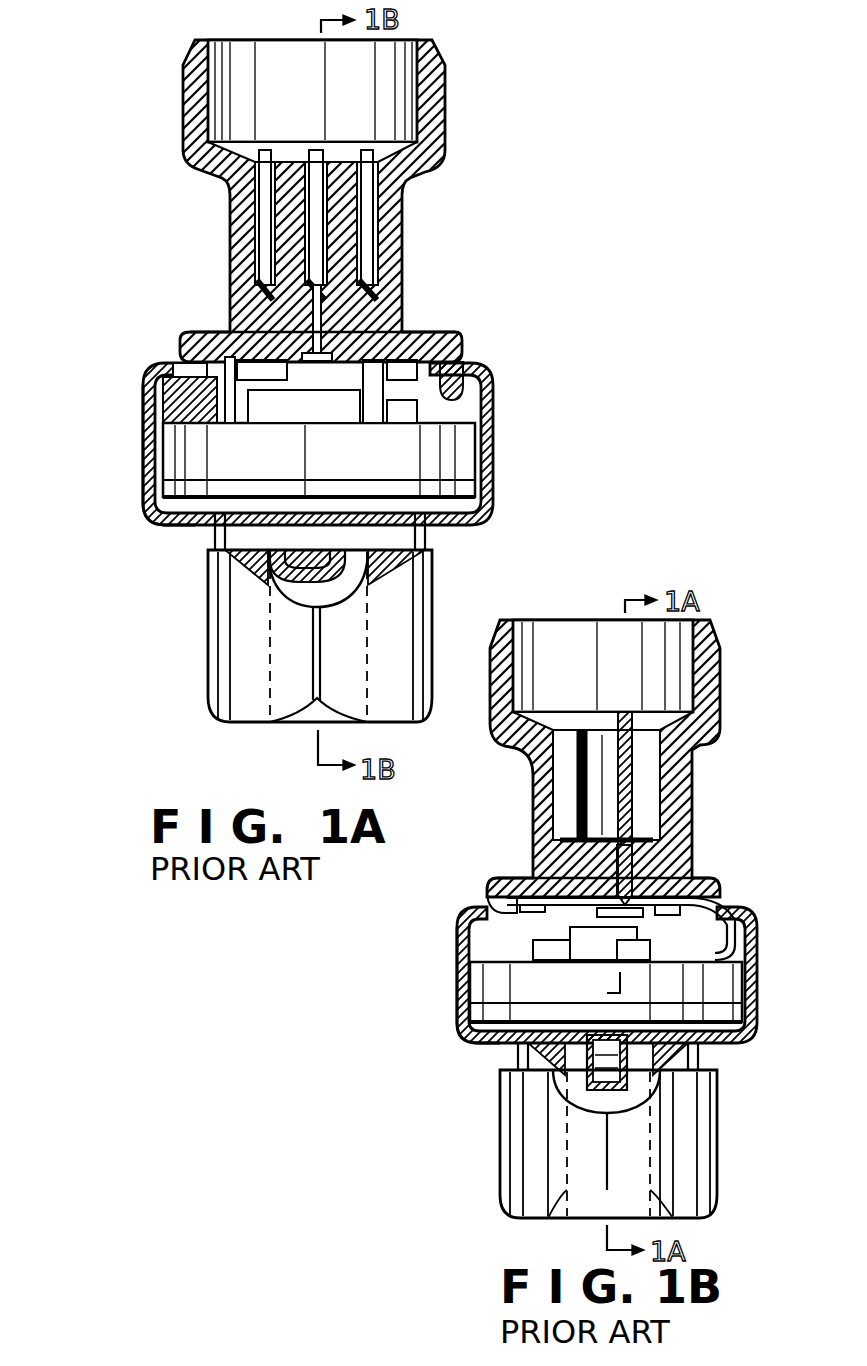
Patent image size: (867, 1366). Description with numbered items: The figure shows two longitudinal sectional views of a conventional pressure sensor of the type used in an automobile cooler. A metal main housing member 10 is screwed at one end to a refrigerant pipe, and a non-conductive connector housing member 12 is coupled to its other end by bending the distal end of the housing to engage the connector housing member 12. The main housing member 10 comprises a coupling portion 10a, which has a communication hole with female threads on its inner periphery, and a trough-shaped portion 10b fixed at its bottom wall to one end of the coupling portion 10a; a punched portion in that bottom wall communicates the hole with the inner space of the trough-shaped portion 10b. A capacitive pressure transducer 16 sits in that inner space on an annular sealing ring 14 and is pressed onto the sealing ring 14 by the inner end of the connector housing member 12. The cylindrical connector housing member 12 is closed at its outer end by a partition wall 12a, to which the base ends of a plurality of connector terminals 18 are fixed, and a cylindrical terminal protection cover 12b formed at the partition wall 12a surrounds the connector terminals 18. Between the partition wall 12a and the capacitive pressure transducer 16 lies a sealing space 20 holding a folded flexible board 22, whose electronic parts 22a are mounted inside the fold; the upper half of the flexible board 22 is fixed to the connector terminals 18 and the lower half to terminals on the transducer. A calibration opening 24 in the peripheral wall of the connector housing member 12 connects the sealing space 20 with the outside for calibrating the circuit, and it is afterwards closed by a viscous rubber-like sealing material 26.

In FIG. 1A, the main housing member 10 is at (136, 490).
In FIG. 1B, the main housing member 10 is at (446, 998).
In FIG. 1A, the coupling portion 10a is at (208, 650).
In FIG. 1B, the coupling portion 10a is at (500, 1105).
In FIG. 1A, the trough-shaped portion 10b is at (150, 507).
In FIG. 1B, the trough-shaped portion 10b is at (462, 1030).
In FIG. 1A, the connector housing member 12 is at (416, 228).
In FIG. 1B, the connector housing member 12 is at (702, 792).
In FIG. 1A, the partition wall 12a is at (392, 305).
In FIG. 1B, the partition wall 12a is at (677, 860).
In FIG. 1A, the terminal protection cover 12b is at (405, 180).
In FIG. 1B, the terminal protection cover 12b is at (532, 777).
In FIG. 1A, the sealing ring 14 is at (470, 512).
In FIG. 1B, the sealing ring 14 is at (750, 1030).
In FIG. 1A, the capacitive pressure transducer 16 is at (456, 460).
In FIG. 1B, the capacitive pressure transducer 16 is at (722, 990).
In FIG. 1A, the connector terminals 18 is at (333, 150).
In FIG. 1B, the connector terminals 18 is at (626, 730).
In FIG. 1A, the sealing space 20 is at (457, 355).
In FIG. 1B, the sealing space 20 is at (555, 890).
In FIG. 1A, the flexible board 22 is at (393, 358).
In FIG. 1B, the flexible board 22 is at (750, 914).
In FIG. 1A, the electronic parts 22a is at (265, 360).
In FIG. 1B, the electronic parts 22a is at (545, 893).
In FIG. 1A, the calibration opening 24 is at (197, 367).
In FIG. 1A, the sealing material 26 is at (225, 363).